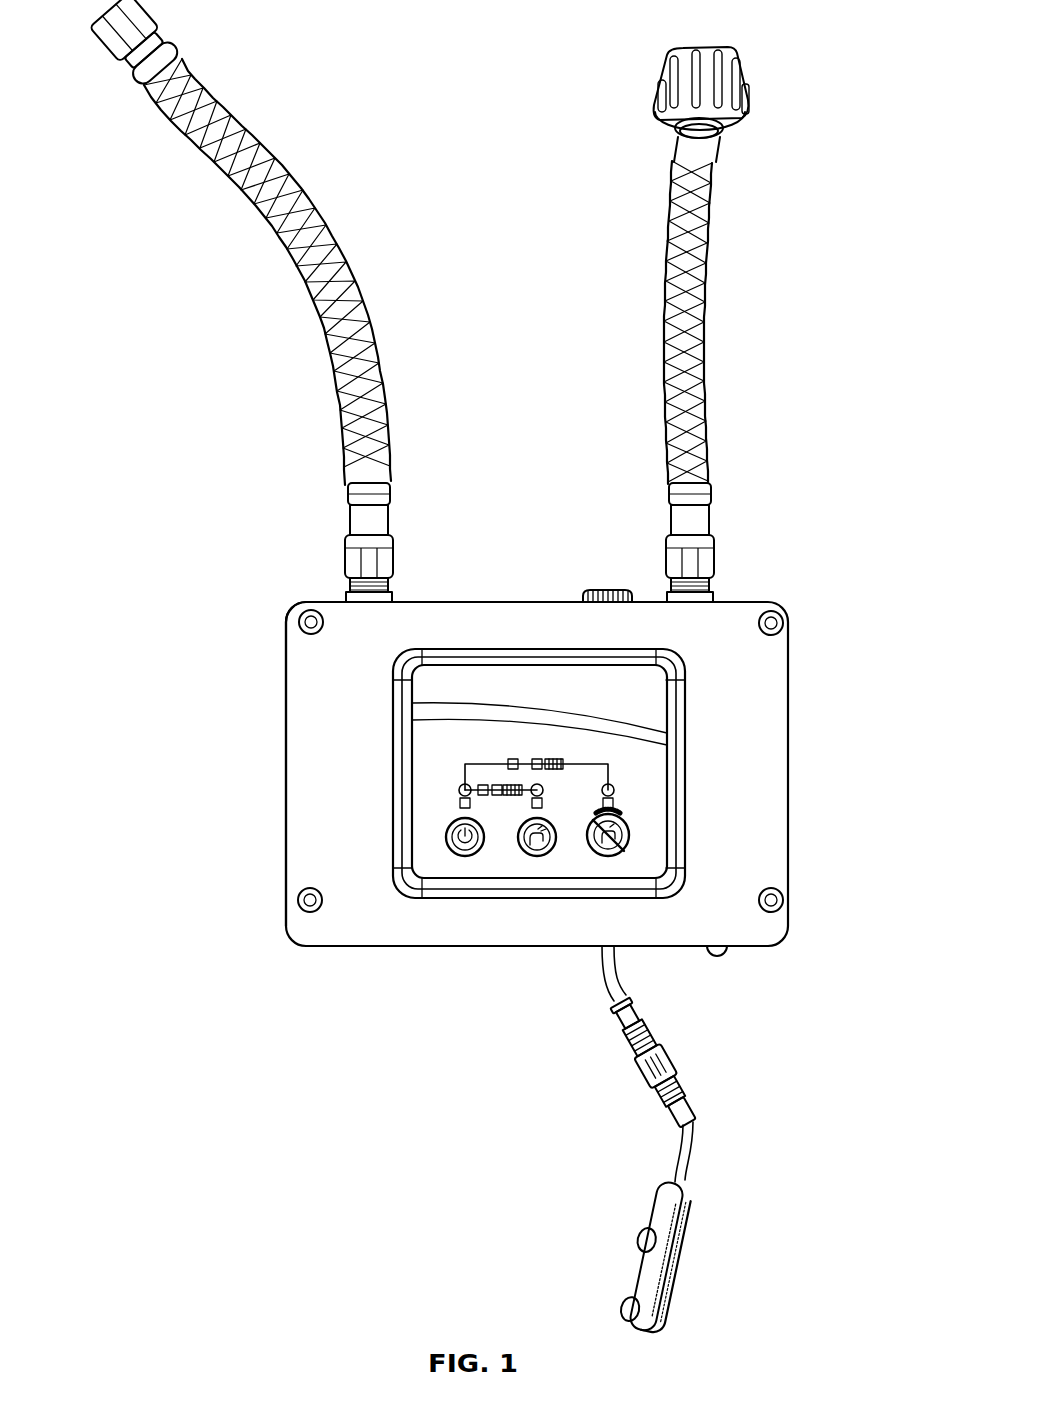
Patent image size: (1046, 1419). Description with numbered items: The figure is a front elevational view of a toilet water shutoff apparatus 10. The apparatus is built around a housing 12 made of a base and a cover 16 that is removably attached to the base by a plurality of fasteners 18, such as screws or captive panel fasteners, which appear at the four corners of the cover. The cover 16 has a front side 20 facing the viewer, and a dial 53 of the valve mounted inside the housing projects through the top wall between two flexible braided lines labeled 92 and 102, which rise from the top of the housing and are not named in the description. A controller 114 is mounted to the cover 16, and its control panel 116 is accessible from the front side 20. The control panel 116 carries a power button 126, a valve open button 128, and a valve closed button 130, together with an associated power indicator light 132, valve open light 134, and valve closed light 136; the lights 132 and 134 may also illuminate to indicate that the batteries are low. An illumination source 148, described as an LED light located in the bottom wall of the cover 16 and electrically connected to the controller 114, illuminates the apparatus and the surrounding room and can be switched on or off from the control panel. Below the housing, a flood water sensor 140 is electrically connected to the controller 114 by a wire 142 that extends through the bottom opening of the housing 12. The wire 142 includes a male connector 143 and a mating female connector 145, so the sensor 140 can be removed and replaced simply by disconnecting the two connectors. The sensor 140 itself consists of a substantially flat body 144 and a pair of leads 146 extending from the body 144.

The water shutoff apparatus 10 is at (828, 581).
The housing 12 is at (797, 785).
The cover 16 is at (340, 931).
The fasteners 18 is at (304, 902).
The front side 20 is at (316, 773).
The dial 53 is at (612, 588).
The inlet hose 92 is at (307, 250).
The outlet hose 102 is at (693, 290).
The controller 114 is at (390, 750).
The control panel 116 is at (630, 689).
The power button 126 is at (466, 851).
The valve open button 128 is at (537, 851).
The valve closed button 130 is at (606, 851).
The power indicator light 132 is at (463, 784).
The valve open light 134 is at (533, 786).
The valve closed light 136 is at (604, 784).
The flood water sensor 140 is at (668, 1230).
The wire 142 is at (690, 1172).
The male connector 143 is at (690, 1113).
The body 144 is at (652, 1292).
The female connector 145 is at (645, 1022).
The leads 146 is at (638, 1235).
The illumination source 148 is at (728, 950).